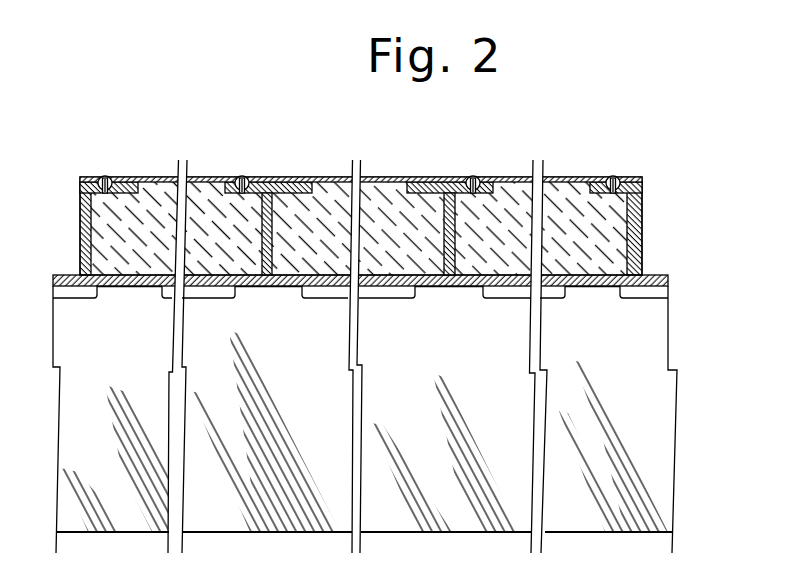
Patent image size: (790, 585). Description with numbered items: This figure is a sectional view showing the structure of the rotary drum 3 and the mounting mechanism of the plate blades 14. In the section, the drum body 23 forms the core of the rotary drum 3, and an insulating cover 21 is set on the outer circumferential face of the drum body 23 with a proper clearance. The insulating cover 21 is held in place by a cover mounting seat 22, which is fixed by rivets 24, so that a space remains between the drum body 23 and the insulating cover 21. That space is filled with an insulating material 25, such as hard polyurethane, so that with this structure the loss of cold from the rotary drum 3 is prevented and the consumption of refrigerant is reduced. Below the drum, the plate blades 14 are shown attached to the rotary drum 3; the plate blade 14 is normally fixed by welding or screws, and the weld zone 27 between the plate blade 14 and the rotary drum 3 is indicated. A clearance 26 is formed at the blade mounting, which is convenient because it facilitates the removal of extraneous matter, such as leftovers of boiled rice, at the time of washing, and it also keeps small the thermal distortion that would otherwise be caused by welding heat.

The rotary drum 3 is at (164, 175).
The plate blade 14 is at (222, 516).
The insulating cover 21 is at (373, 177).
The cover mounting seat 22 is at (268, 178).
The drum body 23 is at (132, 287).
The rivet 24 is at (236, 176).
The insulating material 25 is at (513, 177).
The clearance 26 is at (204, 293).
The weld zone 27 is at (276, 293).